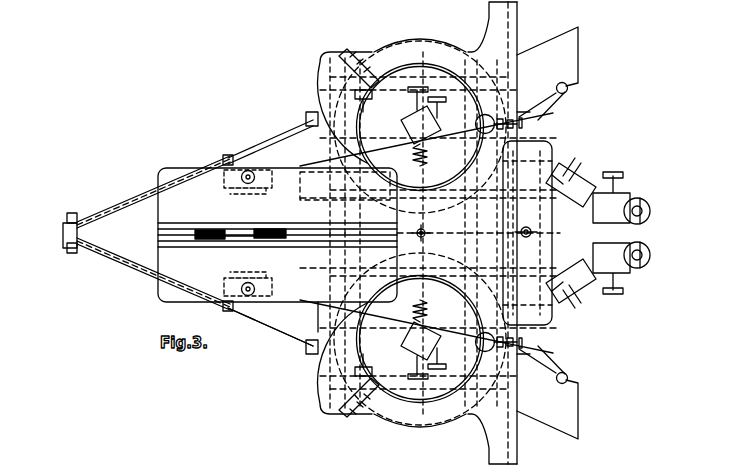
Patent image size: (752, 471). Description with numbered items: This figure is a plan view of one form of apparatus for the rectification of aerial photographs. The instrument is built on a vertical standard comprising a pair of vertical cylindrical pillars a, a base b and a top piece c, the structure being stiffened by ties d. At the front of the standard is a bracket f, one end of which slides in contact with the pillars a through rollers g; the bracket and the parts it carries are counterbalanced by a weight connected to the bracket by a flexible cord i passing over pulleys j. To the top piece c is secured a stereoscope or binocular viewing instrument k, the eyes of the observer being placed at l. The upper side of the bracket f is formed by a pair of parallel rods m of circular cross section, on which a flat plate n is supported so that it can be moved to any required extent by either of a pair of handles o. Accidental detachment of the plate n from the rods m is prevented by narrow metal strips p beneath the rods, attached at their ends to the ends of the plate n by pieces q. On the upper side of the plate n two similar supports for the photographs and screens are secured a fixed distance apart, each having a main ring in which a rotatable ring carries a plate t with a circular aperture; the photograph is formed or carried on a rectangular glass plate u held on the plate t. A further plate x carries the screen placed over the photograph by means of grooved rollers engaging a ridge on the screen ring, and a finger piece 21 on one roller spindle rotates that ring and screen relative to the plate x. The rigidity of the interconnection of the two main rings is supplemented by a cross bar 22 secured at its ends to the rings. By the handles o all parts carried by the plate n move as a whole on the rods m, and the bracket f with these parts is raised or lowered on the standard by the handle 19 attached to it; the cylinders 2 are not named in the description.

The vertical cylindrical pillars a is at (244, 152).
The base b is at (288, 146).
The top piece c is at (300, 166).
The ties d is at (110, 262).
The bracket f is at (282, 210).
The rollers g is at (262, 164).
The flexible cord i is at (240, 242).
The pulleys j is at (204, 230).
The stereoscope or binocular viewing instrument k is at (575, 180).
The observer's eye position l is at (640, 200).
The rods m is at (352, 212).
The flat plate n is at (320, 328).
The handles o is at (546, 96).
The narrow metal strips p is at (412, 102).
The pieces q is at (310, 122).
The plate t is at (402, 36).
The glass plate u is at (360, 97).
The plate x is at (382, 46).
The cylinder 2 is at (320, 70).
The handle 19 is at (556, 232).
The finger piece 21 is at (500, 92).
The cross bar 22 is at (344, 186).